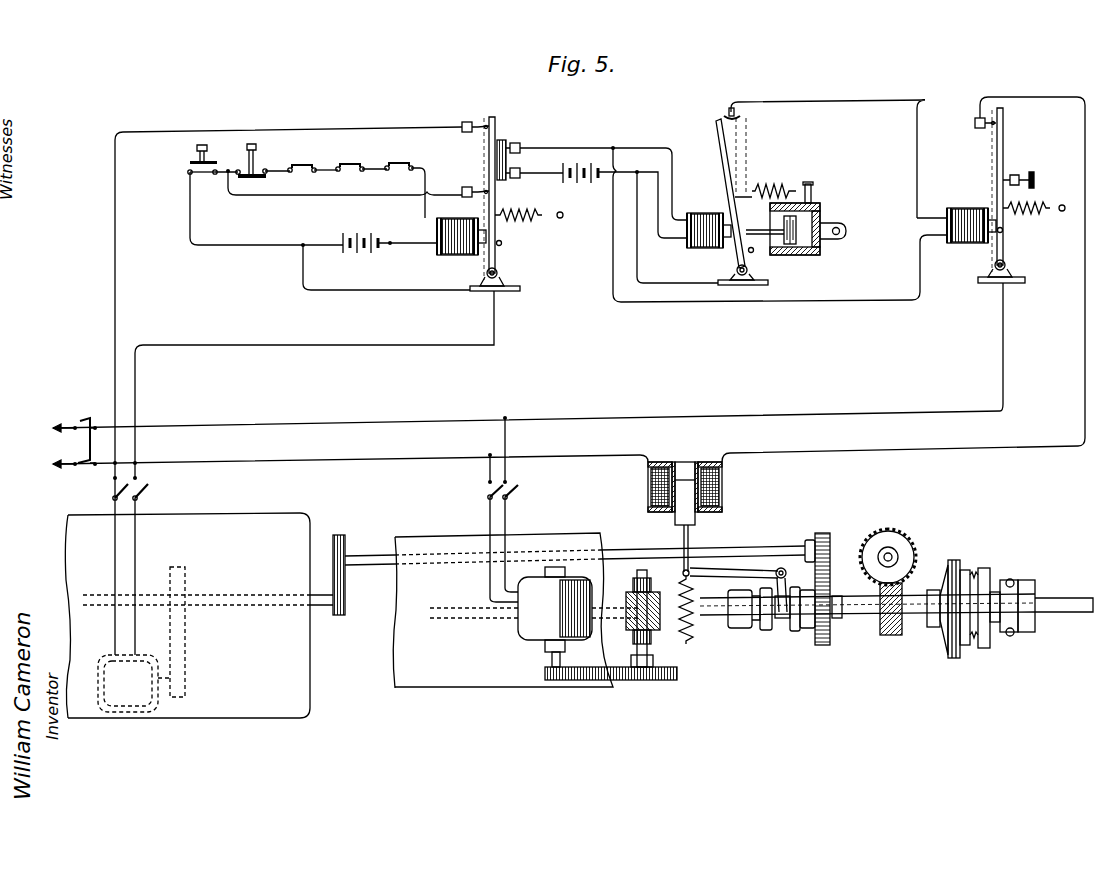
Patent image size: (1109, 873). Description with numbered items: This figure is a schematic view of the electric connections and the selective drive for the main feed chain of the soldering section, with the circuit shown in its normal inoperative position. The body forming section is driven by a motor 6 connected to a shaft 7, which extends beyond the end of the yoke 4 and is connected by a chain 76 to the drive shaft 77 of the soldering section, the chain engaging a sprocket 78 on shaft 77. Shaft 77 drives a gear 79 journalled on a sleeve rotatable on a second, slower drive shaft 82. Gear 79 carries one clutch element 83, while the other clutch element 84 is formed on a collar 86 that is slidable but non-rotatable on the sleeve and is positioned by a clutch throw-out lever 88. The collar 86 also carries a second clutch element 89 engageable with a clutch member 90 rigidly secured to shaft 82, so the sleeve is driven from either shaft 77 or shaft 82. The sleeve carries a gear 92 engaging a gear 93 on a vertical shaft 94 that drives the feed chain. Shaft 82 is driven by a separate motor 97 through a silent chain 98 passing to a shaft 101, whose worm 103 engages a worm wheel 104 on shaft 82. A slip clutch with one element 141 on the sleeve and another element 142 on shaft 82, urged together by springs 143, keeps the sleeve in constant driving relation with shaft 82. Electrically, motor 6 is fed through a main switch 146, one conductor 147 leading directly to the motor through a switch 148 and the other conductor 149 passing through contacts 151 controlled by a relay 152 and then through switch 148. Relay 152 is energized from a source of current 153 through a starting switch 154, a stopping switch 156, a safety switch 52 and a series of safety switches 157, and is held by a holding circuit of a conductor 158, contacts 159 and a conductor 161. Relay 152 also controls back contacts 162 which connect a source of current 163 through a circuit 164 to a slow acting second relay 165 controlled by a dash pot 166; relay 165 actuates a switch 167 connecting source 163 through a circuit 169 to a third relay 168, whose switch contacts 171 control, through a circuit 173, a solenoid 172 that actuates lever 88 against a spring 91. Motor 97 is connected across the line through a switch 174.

The yoke 4 is at (303, 692).
The motor 6 is at (148, 713).
The shaft 7 is at (216, 592).
The safety switch 52 is at (303, 164).
The chain 76 is at (346, 548).
The drive shaft 77 is at (378, 552).
The sprocket 78 is at (830, 540).
The gear 79 is at (824, 648).
The second drive shaft 82 is at (458, 622).
The clutch element 83 is at (810, 634).
The clutch element 84 is at (795, 634).
The collar 86 is at (770, 640).
The clutch throw-out lever 88 is at (793, 565).
The second clutch element 89 is at (765, 632).
The clutch member 90 is at (733, 630).
The spring 91 is at (692, 585).
The gear 92 is at (891, 637).
The gear 93 is at (910, 540).
The vertical shaft 94 is at (890, 553).
The motor 97 is at (522, 635).
The silent chain 98 is at (602, 681).
The shaft 101 is at (648, 656).
The worm 103 is at (650, 600).
The worm wheel 104 is at (634, 590).
The slip clutch element 141 is at (942, 572).
The slip clutch element 142 is at (963, 572).
The springs 143 is at (986, 572).
The main switch 146 is at (86, 418).
The conductor 147 is at (118, 551).
The switch 148 is at (150, 486).
The conductor 149 is at (110, 313).
The contacts 151 is at (487, 120).
The relay 152 is at (438, 258).
The source of current 153 is at (362, 228).
The starting switch 154 is at (216, 160).
The stopping switch 156 is at (258, 168).
The safety switches 157 is at (395, 162).
The conductor 158 is at (292, 197).
The contacts 159 is at (486, 190).
The conductor 161 is at (365, 291).
The back contacts 162 is at (522, 170).
The source of current 163 is at (583, 160).
The circuit 164 is at (648, 160).
The second relay 165 is at (702, 212).
The dash pot 166 is at (815, 210).
The switch 167 is at (742, 118).
The third relay 168 is at (966, 246).
The circuit 169 is at (873, 102).
The switch contacts 171 is at (992, 130).
The solenoid 172 is at (697, 460).
The circuit 173 is at (800, 450).
The switch 174 is at (519, 487).